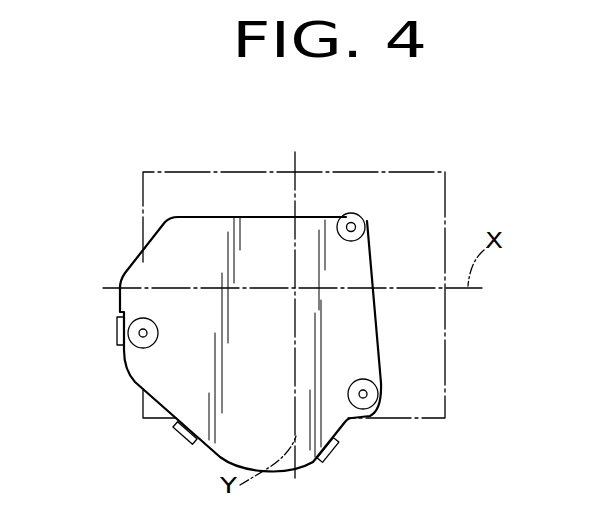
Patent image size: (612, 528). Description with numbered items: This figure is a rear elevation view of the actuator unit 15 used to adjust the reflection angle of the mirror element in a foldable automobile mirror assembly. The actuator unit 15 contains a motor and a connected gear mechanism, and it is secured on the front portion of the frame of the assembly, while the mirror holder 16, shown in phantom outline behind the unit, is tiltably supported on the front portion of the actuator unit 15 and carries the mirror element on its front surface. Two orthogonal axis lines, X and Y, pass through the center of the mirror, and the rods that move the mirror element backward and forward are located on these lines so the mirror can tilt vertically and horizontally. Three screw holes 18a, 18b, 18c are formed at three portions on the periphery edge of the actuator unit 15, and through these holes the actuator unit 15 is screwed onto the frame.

The actuator unit 15 is at (255, 222).
The mirror holder 16 is at (170, 172).
The screw hole 18a is at (358, 226).
The screw hole 18b is at (375, 388).
The screw hole 18c is at (137, 345).